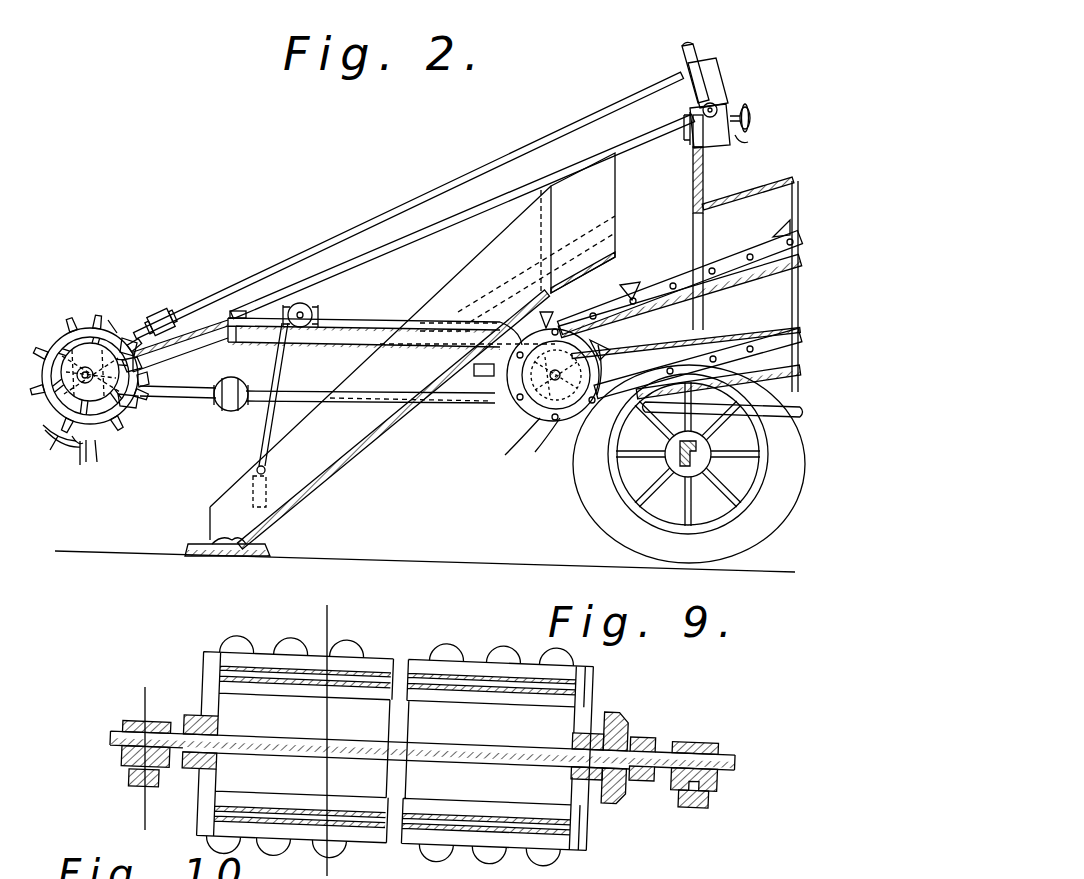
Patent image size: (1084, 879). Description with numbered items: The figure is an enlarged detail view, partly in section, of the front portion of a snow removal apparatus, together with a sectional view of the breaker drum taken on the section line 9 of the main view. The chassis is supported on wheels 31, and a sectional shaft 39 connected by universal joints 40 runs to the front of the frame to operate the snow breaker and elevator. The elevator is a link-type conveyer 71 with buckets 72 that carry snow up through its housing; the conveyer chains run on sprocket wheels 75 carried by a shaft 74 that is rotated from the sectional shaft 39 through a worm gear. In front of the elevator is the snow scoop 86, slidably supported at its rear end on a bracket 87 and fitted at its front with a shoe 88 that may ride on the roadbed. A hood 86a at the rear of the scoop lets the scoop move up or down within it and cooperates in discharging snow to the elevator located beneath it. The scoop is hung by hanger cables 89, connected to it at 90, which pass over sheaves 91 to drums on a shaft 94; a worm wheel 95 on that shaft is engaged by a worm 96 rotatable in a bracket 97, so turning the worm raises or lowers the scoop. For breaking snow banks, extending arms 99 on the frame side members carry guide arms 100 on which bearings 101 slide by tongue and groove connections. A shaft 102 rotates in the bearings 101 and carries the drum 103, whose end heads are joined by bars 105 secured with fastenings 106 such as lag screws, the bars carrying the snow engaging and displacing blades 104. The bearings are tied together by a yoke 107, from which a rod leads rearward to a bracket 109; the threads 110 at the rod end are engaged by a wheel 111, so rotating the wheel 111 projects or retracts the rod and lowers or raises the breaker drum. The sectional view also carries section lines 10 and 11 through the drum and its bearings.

In FIG. 2, the section line 9 is at (46, 331).
In FIG. 9, the section line 10 is at (331, 627).
In FIG. 9, the section line 11 is at (143, 697).
In FIG. 2, the wheel 31 is at (613, 518).
In FIG. 2, the sectional shaft 39 is at (512, 420).
In FIG. 2, the universal joint 40 is at (317, 404).
In FIG. 2, the conveyer 71 is at (658, 292).
In FIG. 2, the bucket 72 is at (708, 256).
In FIG. 2, the shaft 74 is at (536, 430).
In FIG. 2, the sprocket wheel 75 is at (548, 422).
In FIG. 2, the snow scoop 86 is at (352, 447).
In FIG. 2, the hood 86a is at (607, 173).
In FIG. 2, the bracket 87 is at (493, 375).
In FIG. 2, the shoe 88 is at (268, 548).
In FIG. 2, the hanger cable 89 is at (258, 430).
In FIG. 2, the cable connection 90 is at (248, 473).
In FIG. 2, the sheave 91 is at (300, 302).
In FIG. 2, the shaft 94 is at (735, 110).
In FIG. 2, the worm wheel 95 is at (755, 119).
In FIG. 2, the worm 96 is at (752, 130).
In FIG. 2, the bracket 97 is at (737, 138).
In FIG. 2, the extending arm 99 is at (378, 320).
In FIG. 2, the guide arm 100 is at (196, 318).
In FIG. 9, the guide arm 100 is at (128, 787).
In FIG. 2, the bearing 101 is at (130, 340).
In FIG. 9, the bearing 101 is at (161, 722).
In FIG. 2, the shaft 102 is at (97, 463).
In FIG. 9, the shaft 102 is at (729, 750).
In FIG. 2, the drum 103 is at (140, 402).
In FIG. 9, the drum 103 is at (583, 699).
In FIG. 2, the blade 104 is at (135, 318).
In FIG. 9, the blade 104 is at (252, 648).
In FIG. 2, the bar 105 is at (83, 445).
In FIG. 9, the bar 105 is at (470, 656).
In FIG. 9, the fastening 106 is at (209, 651).
In FIG. 2, the yoke 107 is at (162, 310).
In FIG. 2, the bracket 109 is at (722, 84).
In FIG. 2, the threads 110 is at (704, 58).
In FIG. 2, the wheel 111 is at (687, 52).